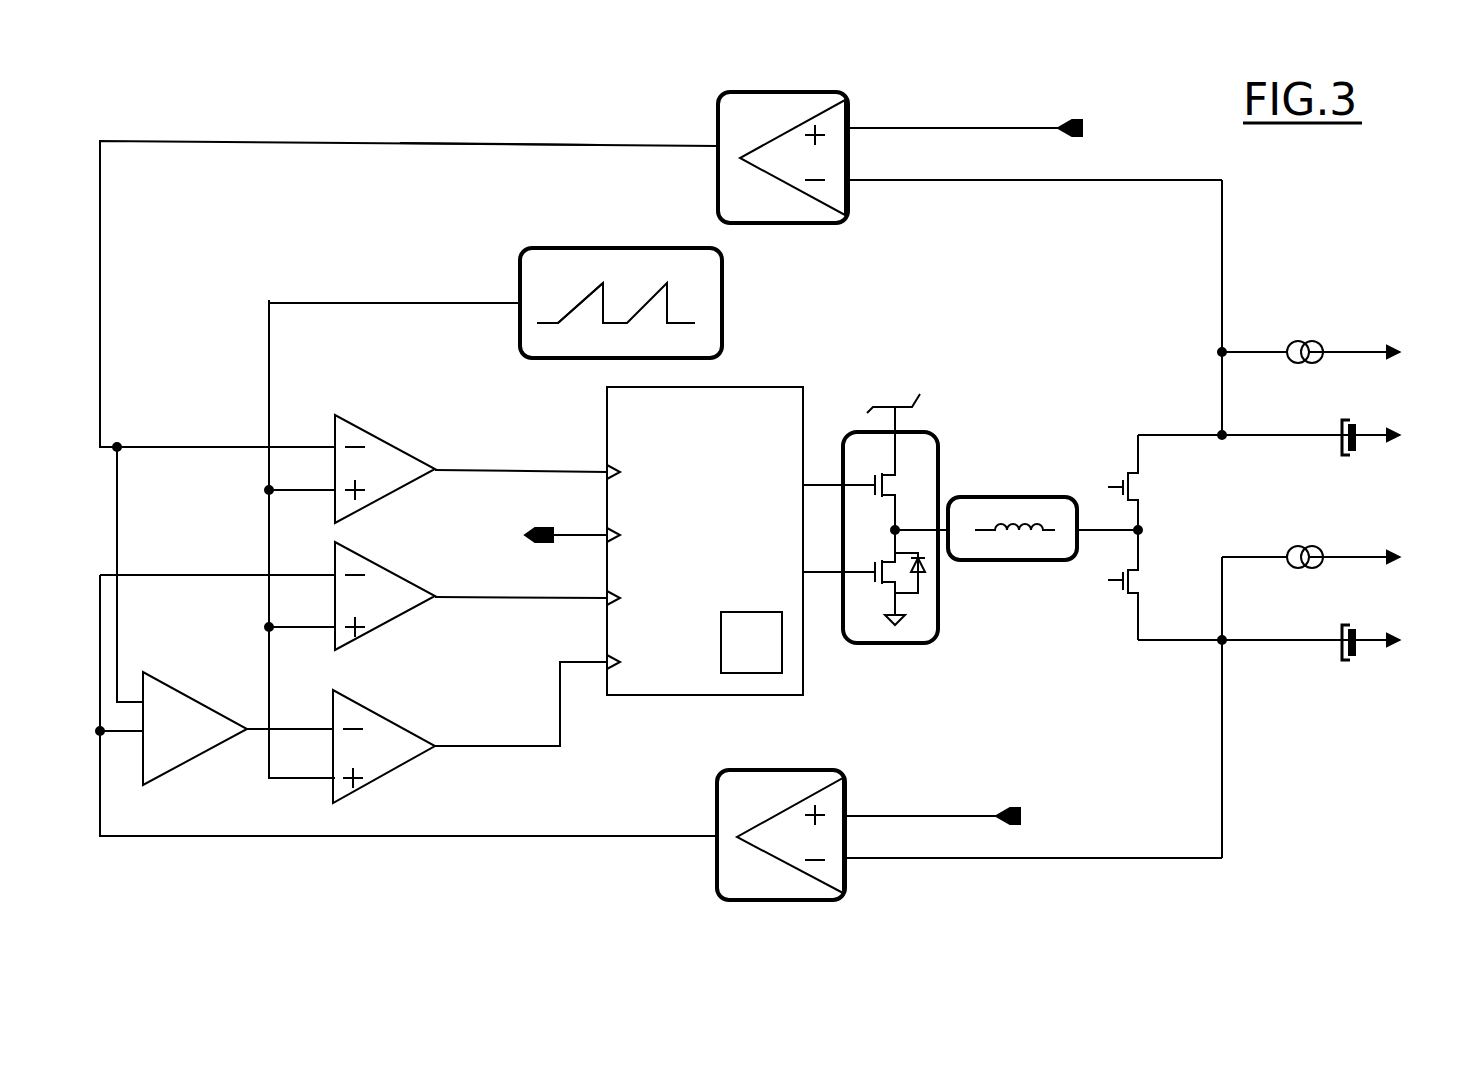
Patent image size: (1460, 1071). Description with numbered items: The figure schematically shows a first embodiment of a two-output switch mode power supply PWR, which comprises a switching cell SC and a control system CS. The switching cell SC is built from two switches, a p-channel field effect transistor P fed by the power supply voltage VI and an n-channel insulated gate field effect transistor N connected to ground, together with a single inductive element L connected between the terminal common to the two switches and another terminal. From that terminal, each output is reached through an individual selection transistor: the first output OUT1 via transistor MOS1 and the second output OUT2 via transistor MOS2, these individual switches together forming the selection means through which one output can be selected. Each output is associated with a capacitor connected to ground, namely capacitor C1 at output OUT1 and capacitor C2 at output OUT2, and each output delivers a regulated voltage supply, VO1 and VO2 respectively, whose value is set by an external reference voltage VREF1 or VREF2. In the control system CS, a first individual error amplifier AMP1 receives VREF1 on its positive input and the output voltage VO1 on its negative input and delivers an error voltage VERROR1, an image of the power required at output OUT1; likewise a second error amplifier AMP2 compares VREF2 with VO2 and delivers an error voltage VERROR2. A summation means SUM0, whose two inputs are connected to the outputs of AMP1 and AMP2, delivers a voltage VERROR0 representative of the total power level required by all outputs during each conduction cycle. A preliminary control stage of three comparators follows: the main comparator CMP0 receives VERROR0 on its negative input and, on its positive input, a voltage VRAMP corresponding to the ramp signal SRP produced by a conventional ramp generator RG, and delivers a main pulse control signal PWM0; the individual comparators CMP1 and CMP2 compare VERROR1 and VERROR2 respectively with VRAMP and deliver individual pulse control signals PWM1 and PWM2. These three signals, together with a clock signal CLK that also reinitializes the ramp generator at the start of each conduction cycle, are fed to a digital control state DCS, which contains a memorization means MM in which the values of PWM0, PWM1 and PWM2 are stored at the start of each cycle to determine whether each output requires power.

The control system CS is at (230, 128).
The error voltage VERROR2 is at (500, 130).
The error voltage VERROR1 is at (430, 851).
The summed error voltage VERROR0 is at (260, 730).
The second individual error amplifier AMP2 is at (790, 92).
The first individual amplification means AMP1 is at (800, 770).
The external reference voltage VREF2 is at (1005, 130).
The external reference voltage VREF1 is at (973, 818).
The switch mode power supply PWR is at (1310, 236).
The ramp generator RG is at (722, 297).
The ramp signal SRP is at (572, 312).
The ramp voltage VRAMP is at (392, 523).
The individual comparator CMP2 is at (400, 425).
The individual comparator CMP1 is at (400, 552).
The main comparator CMP0 is at (398, 701).
The individual pulse control signal PWM2 is at (512, 454).
The individual pulse control signal PWM1 is at (512, 582).
The main pulse control signal PWM0 is at (498, 732).
The summation means SUM0 is at (238, 728).
The digital control state DCS is at (725, 541).
The memorization means MM is at (751, 642).
The clock signal CLK is at (537, 535).
The switching cell SC is at (1021, 420).
The power supply voltage VI is at (893, 393).
The p-channel field effect transistor P is at (869, 488).
The n-channel insulated gate field effect transistor N is at (884, 577).
The inductive element L is at (1012, 528).
The selection transistor MOS2 is at (1098, 482).
The selection transistor MOS1 is at (1098, 585).
The regulated voltage supply VO1 is at (1309, 339).
The regulated voltage supply VO2 is at (1311, 544).
The second output terminal OUT2 is at (1222, 435).
The first output terminal OUT1 is at (1222, 640).
The capacitor C2 is at (1348, 426).
The capacitor C1 is at (1348, 631).